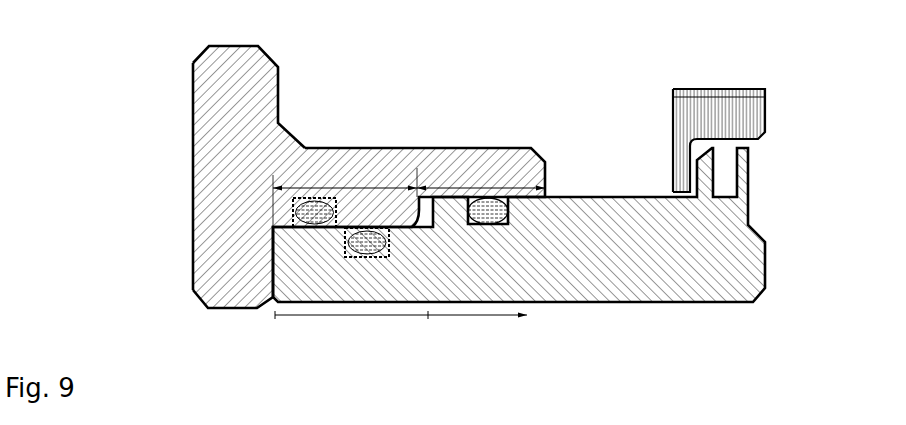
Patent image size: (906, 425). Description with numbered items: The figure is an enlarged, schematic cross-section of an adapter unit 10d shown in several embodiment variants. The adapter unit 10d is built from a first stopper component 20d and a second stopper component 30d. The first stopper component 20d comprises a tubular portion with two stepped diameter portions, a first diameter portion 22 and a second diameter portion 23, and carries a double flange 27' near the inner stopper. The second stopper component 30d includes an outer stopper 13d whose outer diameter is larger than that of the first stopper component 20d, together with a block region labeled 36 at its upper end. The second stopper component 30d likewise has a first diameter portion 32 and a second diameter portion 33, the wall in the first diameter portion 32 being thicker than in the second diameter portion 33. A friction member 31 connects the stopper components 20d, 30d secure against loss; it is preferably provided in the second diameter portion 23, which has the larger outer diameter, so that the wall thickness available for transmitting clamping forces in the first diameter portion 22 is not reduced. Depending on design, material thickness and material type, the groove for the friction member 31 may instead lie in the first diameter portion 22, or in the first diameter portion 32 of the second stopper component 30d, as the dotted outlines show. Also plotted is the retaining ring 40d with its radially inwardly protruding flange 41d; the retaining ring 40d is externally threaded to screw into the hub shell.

The adapter unit 10d is at (97, 88).
The second stopper component 30d is at (193, 62).
The flange portion 36 is at (258, 92).
The outer stopper 13d is at (200, 193).
The first stopper component 20d is at (668, 287).
The retaining ring 40d is at (673, 89).
The leg of retaining element 41d is at (672, 167).
The friction member 31 is at (488, 198).
The first diameter portion 32 is at (370, 185).
The second diameter portion 33 is at (457, 185).
The first diameter portion 22 is at (348, 317).
The second diameter portion 23 is at (473, 317).
The double flange 27' is at (814, 179).